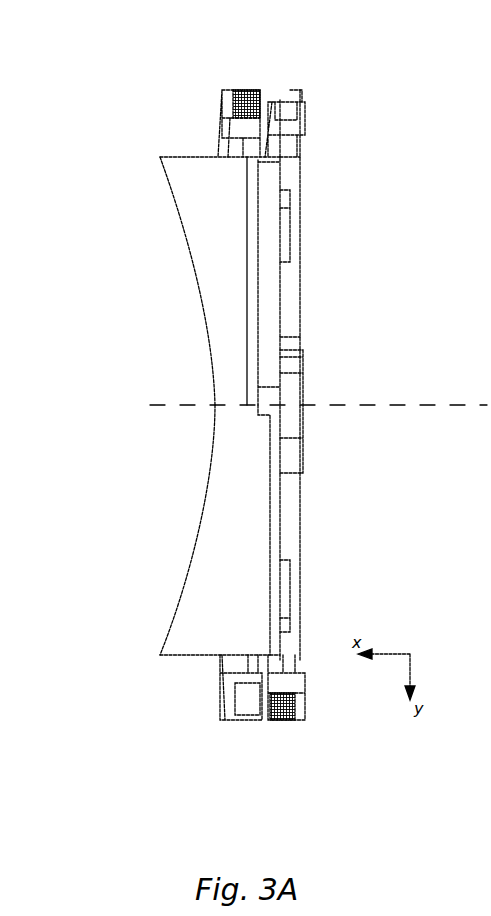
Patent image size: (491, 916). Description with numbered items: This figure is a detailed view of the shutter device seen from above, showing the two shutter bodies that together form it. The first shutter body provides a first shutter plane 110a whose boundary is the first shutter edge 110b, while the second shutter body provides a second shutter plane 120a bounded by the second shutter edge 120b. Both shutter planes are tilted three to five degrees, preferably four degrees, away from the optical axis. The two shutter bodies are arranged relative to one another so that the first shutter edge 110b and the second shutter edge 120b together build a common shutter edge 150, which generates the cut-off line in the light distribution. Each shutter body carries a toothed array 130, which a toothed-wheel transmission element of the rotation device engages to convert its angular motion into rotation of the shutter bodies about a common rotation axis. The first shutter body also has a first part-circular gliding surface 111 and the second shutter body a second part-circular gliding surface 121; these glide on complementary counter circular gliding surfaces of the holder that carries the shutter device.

The first shutter plane 110a is at (225, 285).
The first shutter edge 110b is at (195, 258).
The second shutter plane 120a is at (228, 522).
The second shutter edge 120b is at (186, 580).
The toothed array 130 is at (240, 92).
The second part-circular gliding surface 121 is at (284, 98).
The first part-circular gliding surface 111 is at (243, 700).
The common shutter edge 150 is at (212, 384).